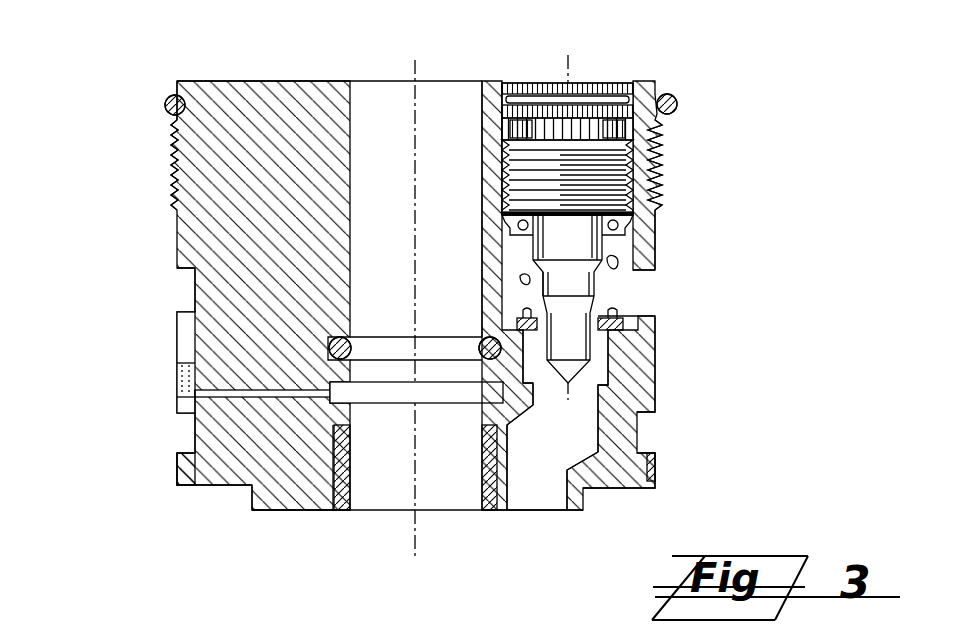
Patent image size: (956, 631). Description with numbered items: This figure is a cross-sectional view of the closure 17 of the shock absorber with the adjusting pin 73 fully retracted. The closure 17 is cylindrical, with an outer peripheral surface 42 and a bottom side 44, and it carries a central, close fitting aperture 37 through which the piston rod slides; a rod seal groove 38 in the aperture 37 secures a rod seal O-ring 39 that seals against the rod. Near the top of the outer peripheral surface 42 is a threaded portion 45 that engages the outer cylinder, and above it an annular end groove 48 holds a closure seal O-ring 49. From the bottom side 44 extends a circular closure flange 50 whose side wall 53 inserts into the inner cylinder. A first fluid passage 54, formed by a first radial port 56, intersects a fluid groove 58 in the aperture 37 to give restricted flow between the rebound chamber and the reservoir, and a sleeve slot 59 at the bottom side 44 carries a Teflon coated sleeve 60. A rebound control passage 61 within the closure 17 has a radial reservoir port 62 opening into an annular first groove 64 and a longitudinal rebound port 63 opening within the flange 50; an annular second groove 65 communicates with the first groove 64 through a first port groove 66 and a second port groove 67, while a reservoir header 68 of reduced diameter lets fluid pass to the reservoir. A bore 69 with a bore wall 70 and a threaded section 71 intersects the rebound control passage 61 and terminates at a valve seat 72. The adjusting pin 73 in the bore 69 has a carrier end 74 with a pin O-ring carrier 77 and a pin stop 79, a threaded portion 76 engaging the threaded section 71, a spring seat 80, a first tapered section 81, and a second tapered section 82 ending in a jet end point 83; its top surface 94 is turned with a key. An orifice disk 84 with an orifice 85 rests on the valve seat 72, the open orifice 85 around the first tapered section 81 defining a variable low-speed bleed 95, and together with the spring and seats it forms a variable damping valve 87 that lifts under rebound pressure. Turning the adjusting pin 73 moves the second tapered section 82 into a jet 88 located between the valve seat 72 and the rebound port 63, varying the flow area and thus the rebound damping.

The closure 17 is at (126, 246).
The aperture 37 is at (372, 66).
The rod seal groove 38 is at (387, 350).
The rod seal O-ring 39 is at (353, 337).
The outer peripheral surface 42 is at (176, 232).
The bottom side 44 is at (200, 483).
The threaded portion 45 is at (172, 133).
The end groove 48 is at (185, 95).
The closure seal O-ring 49 is at (165, 102).
The closure flange 50 is at (272, 511).
The side wall 53 is at (250, 500).
The first fluid passage 54 is at (178, 393).
The first radial port 56 is at (172, 397).
The fluid groove 58 is at (378, 395).
The sleeve slot 59 is at (336, 512).
The sleeve 60 is at (350, 492).
The rebound control passage 61 is at (538, 535).
The reservoir port 62 is at (678, 303).
The rebound port 63 is at (490, 513).
The first groove 64 is at (195, 292).
The second groove 65 is at (193, 437).
The first port groove 66 is at (187, 358).
The second port groove 67 is at (658, 484).
The reservoir header 68 is at (657, 465).
The bore 69 is at (579, 170).
The bore wall 70 is at (521, 125).
The threaded section 71 is at (500, 173).
The valve seat 72 is at (657, 347).
The adjusting pin 73 is at (645, 78).
The carrier end 74 is at (545, 83).
The threaded portion 76 is at (665, 178).
The pin O-ring carrier 77 is at (495, 97).
The pin stop 79 is at (657, 132).
The spring seat 80 is at (657, 238).
The first tapered section 81 is at (538, 292).
The second tapered section 82 is at (650, 390).
The jet end point 83 is at (585, 390).
The orifice disk 84 is at (517, 322).
The orifice 85 is at (535, 333).
The variable damping valve 87 is at (604, 300).
The jet 88 is at (533, 403).
The top surface 94 is at (621, 75).
The variable low-speed bleed 95 is at (615, 281).